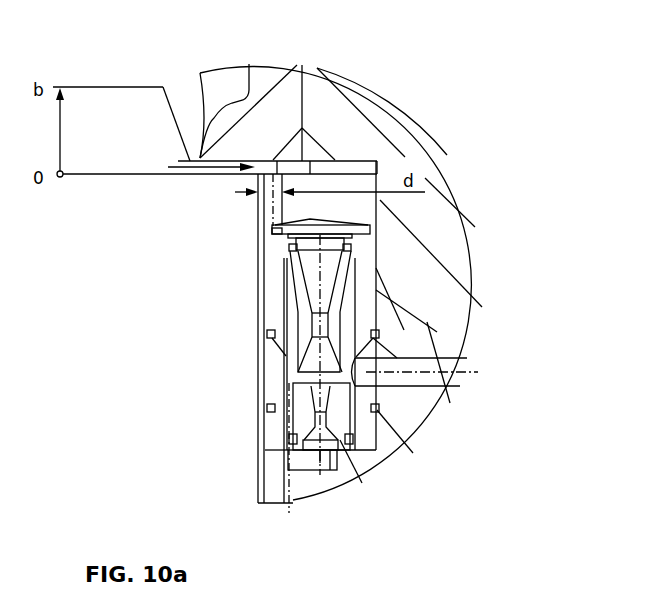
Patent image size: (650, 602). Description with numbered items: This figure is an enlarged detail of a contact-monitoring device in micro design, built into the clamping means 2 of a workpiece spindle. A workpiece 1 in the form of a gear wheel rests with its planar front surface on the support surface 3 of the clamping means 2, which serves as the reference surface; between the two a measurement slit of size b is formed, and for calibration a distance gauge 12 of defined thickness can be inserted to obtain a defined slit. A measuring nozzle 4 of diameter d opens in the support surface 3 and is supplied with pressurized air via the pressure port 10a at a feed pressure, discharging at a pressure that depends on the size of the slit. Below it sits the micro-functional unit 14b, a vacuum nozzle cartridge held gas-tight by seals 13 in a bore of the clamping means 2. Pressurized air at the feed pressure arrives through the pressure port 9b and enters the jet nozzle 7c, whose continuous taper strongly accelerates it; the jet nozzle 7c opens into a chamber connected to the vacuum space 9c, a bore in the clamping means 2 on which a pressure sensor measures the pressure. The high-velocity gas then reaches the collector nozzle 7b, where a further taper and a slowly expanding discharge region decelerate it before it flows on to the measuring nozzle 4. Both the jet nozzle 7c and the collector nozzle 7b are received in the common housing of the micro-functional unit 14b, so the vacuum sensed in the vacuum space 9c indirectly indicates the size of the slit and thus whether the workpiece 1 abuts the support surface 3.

The workpiece 1 is at (268, 95).
The clamping means 2 is at (335, 106).
The support surface 3 is at (310, 168).
The measuring nozzle 4 is at (273, 229).
The distance gauge 12 is at (168, 167).
The pressure port 10a is at (285, 240).
The micro-functional unit 14b is at (345, 205).
The collector nozzle 7b is at (303, 313).
The jet nozzle 7c is at (300, 424).
The pressure port 9b is at (285, 482).
The vacuum space 9c is at (445, 352).
The seals 13 is at (268, 334).